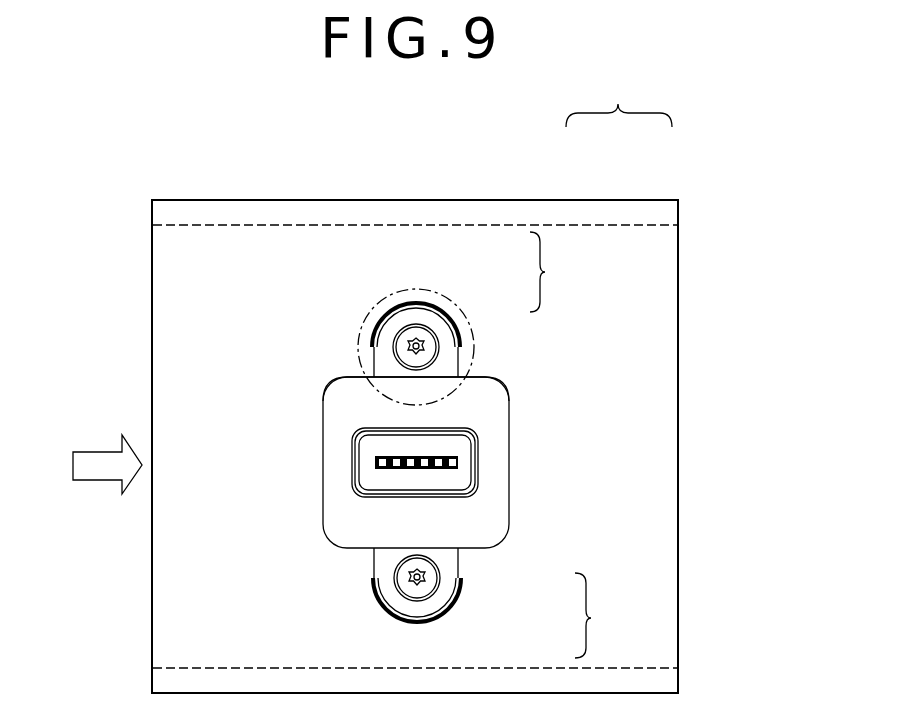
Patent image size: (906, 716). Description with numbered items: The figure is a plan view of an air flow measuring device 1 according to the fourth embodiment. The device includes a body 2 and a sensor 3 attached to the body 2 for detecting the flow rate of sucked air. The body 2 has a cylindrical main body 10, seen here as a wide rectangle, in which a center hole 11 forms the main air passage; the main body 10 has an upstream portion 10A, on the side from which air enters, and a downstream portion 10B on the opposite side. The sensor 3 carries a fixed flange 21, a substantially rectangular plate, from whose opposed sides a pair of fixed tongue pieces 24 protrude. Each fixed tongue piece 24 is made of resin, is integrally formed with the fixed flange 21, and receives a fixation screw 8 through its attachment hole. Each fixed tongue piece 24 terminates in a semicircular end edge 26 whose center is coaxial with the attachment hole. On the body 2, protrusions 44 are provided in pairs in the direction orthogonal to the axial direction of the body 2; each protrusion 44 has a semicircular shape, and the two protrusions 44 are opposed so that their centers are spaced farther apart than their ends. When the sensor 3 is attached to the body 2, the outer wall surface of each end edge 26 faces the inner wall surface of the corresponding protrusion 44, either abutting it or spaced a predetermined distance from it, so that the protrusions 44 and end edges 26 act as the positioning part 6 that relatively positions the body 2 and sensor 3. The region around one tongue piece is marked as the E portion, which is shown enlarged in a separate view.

The air flow measuring device 1 is at (619, 100).
The body 2 is at (652, 200).
The sensor 3 is at (508, 388).
The positioning part 6 is at (569, 445).
The fixation screw 8 is at (428, 356).
The main body 10 is at (197, 250).
The upstream portion 10A is at (152, 286).
The downstream portion 10B is at (678, 283).
The center hole 11 is at (300, 226).
The fixed flange 21 is at (497, 462).
The fixed tongue piece 24 is at (387, 357).
The end edge 26 is at (412, 311).
The protrusion 44 is at (392, 304).
The E portion E is at (373, 313).